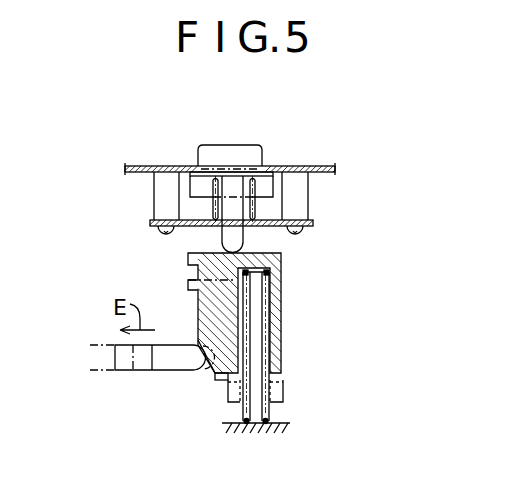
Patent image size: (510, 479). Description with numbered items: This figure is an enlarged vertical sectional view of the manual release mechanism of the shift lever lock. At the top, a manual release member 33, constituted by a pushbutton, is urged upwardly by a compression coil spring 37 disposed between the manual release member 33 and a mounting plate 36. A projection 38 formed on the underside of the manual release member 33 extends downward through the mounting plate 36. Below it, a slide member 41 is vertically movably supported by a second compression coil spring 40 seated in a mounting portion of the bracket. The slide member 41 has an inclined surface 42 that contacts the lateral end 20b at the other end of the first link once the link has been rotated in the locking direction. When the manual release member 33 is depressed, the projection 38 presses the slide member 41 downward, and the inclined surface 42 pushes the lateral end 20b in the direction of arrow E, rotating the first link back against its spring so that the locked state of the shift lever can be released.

The manual release member 33 is at (243, 145).
The compression coil spring 37 is at (253, 213).
The mounting plate 36 is at (312, 223).
The projection 38 is at (247, 237).
The slide member 41 is at (282, 297).
The inclined surface 42 is at (198, 340).
The compression coil spring 40 is at (270, 421).
The lateral end 20b is at (207, 372).